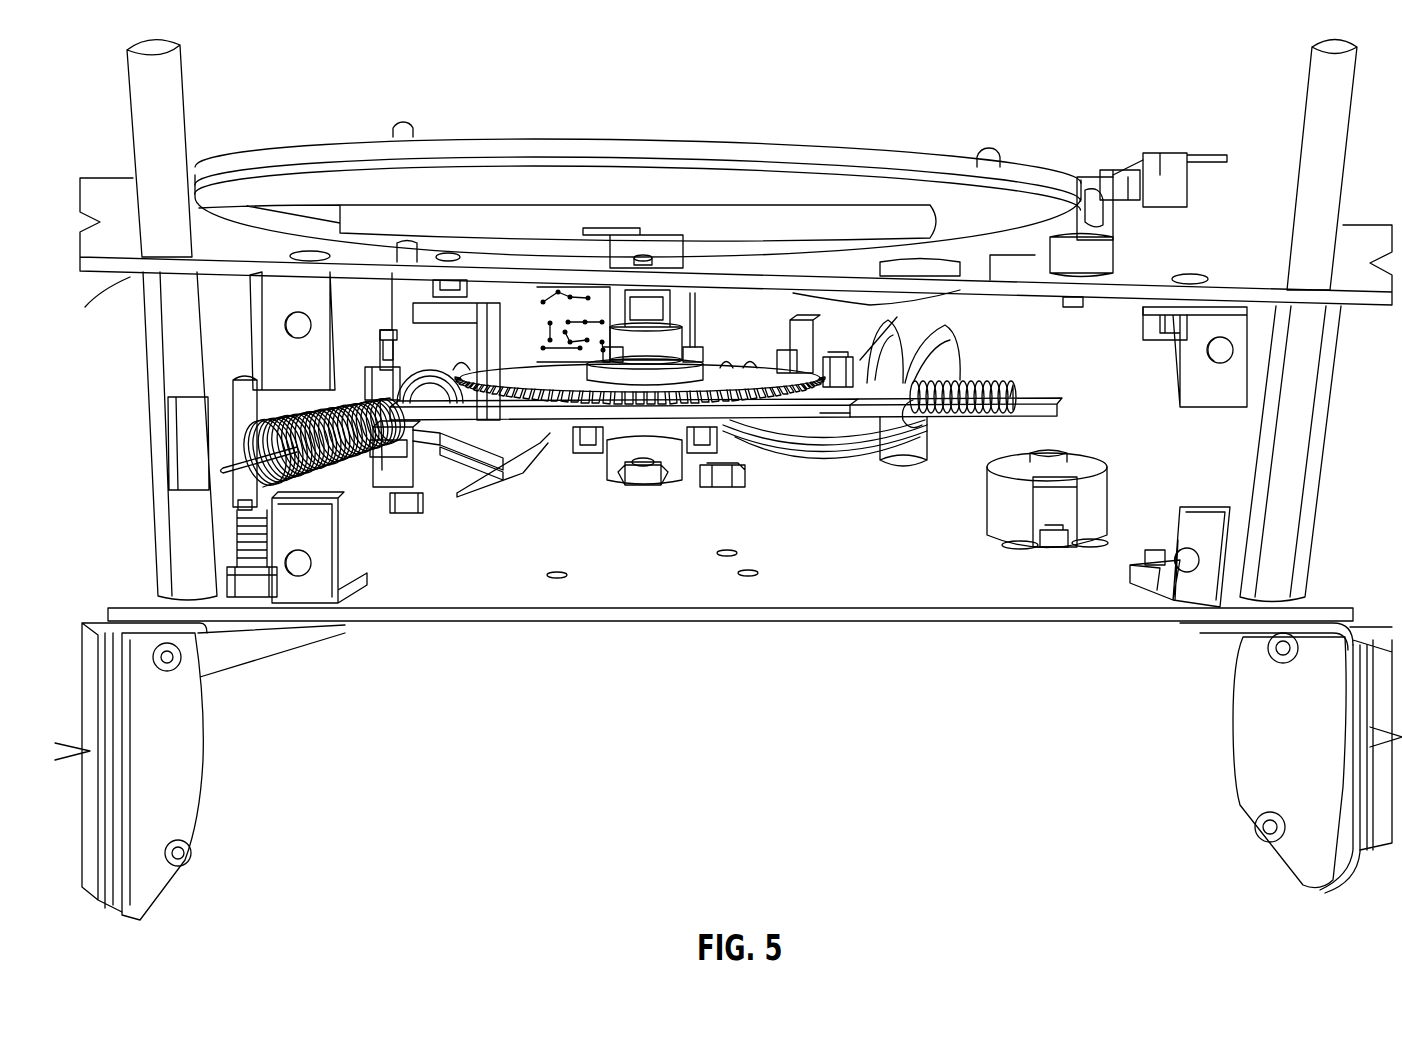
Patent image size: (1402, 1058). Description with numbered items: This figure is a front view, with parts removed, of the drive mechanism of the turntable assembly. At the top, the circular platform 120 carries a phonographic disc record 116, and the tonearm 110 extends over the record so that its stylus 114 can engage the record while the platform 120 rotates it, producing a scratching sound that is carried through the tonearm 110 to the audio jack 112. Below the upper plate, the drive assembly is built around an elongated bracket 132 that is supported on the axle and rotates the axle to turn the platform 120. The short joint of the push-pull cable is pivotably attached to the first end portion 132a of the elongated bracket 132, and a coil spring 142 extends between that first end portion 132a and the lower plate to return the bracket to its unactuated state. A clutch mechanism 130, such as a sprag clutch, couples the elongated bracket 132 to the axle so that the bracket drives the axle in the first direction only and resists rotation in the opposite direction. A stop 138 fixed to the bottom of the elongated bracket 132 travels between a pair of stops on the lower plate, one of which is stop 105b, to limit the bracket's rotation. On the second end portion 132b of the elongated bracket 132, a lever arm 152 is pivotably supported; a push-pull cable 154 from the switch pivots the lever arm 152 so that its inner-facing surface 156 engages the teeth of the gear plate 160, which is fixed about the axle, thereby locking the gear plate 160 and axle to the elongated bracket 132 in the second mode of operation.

The stop 105b is at (1093, 493).
The tonearm 110 is at (1113, 166).
The audio jack 112 is at (958, 343).
The stylus 114 is at (1163, 210).
The phonographic disc record 116 is at (707, 150).
The circular platform 120 is at (890, 190).
The clutch mechanism 130 is at (660, 405).
The elongated bracket 132 is at (452, 422).
The first end portion of the elongated bracket 132a is at (377, 427).
The second end portion of the elongated bracket 132b is at (827, 413).
The stop 138 is at (1020, 423).
The coil spring 142 is at (380, 470).
The lever arm 152 is at (893, 405).
The push-pull cable 154 is at (523, 473).
The inner-facing surface 156 is at (797, 337).
The gear plate 160 is at (532, 365).